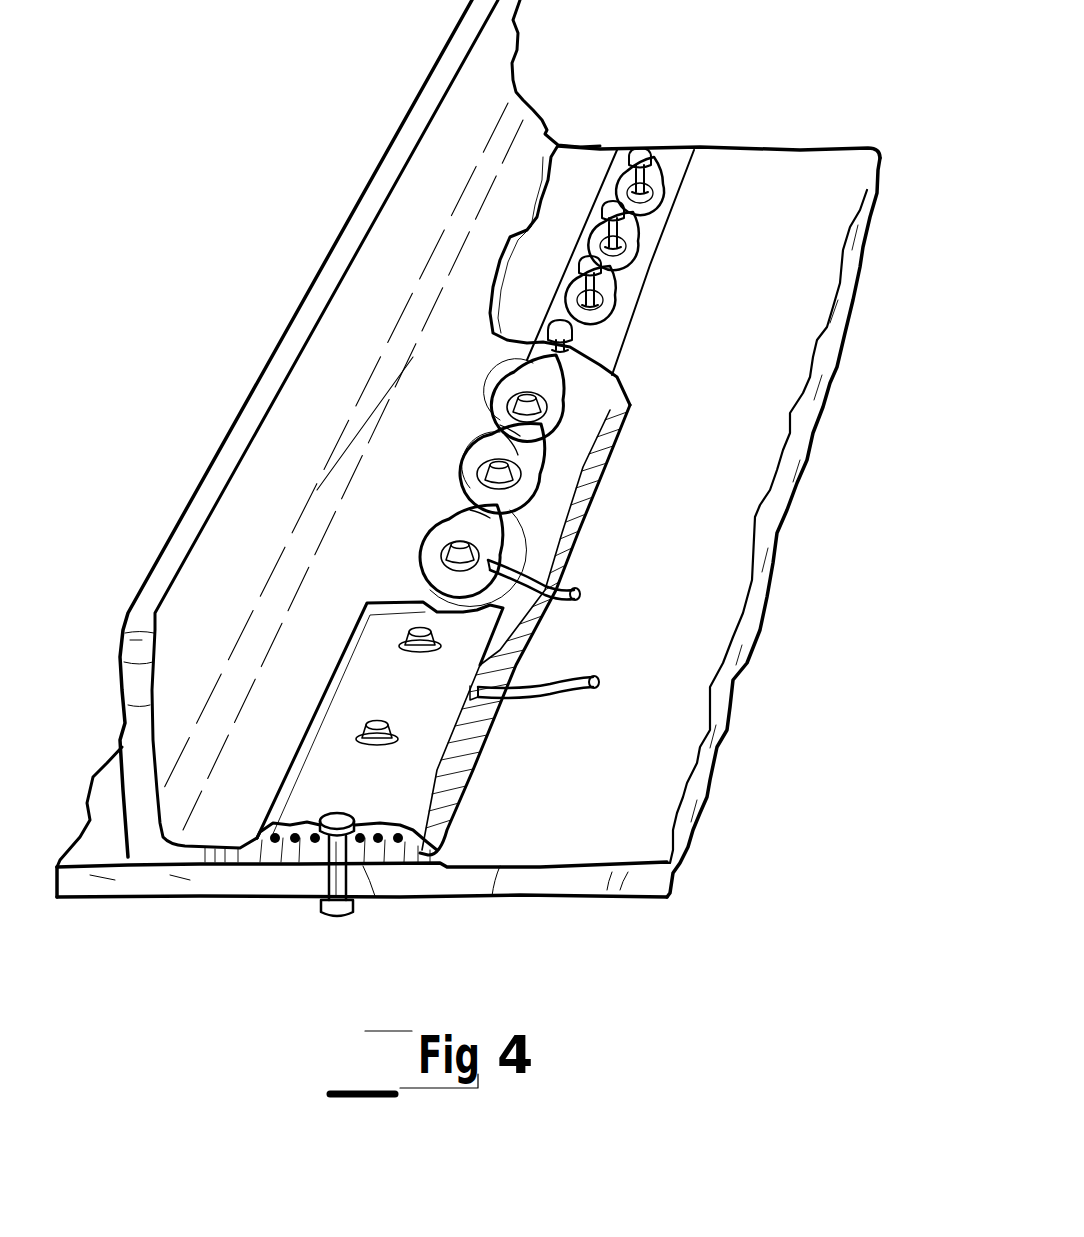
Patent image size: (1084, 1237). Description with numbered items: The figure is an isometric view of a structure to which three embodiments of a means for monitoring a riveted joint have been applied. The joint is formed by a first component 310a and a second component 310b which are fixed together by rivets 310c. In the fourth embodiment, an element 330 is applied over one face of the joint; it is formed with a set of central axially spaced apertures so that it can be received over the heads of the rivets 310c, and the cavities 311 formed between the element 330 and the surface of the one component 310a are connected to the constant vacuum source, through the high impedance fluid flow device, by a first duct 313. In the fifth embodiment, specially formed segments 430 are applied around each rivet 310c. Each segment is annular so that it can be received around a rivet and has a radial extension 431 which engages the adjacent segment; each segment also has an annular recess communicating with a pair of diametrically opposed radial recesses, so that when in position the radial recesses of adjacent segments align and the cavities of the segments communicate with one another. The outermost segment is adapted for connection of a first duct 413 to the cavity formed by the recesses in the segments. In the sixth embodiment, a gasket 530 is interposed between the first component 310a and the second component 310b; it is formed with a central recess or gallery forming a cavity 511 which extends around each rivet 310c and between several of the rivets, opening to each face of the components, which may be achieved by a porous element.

The first component 310a is at (390, 136).
The second component 310b is at (821, 386).
The rivets 310c is at (520, 380).
The cavities 311 is at (283, 847).
The first duct 313 is at (598, 678).
The element 330 is at (400, 800).
The first duct 413 is at (578, 587).
The segments 430 is at (530, 507).
The radial extension 431 is at (540, 438).
The cavity 511 is at (657, 235).
The gasket 530 is at (645, 175).